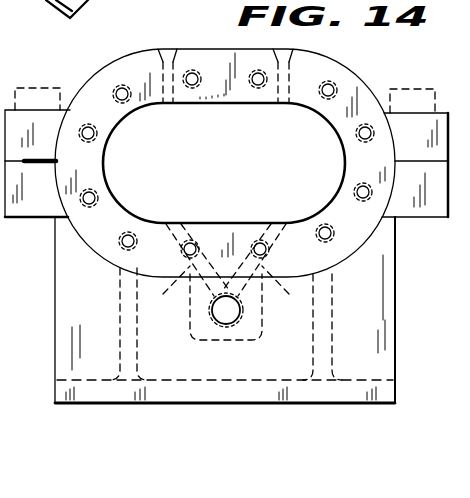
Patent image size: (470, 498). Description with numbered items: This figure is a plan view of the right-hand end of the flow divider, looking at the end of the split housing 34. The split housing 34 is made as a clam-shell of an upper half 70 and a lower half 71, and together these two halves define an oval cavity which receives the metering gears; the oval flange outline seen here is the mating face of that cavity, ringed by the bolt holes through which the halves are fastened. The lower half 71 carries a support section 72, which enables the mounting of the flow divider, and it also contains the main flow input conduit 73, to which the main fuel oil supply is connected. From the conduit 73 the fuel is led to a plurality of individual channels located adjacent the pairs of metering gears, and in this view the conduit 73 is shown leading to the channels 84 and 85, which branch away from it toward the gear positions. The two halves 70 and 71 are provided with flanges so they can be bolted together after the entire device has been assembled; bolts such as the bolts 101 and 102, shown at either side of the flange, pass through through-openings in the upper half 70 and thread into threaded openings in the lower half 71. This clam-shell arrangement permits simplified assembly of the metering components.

The split housing 34 is at (397, 288).
The upper half 70 is at (108, 64).
The lower half 71 is at (104, 247).
The support section 72 is at (198, 392).
The main flow input conduit 73 is at (226, 316).
The channel 84 is at (189, 274).
The channel 85 is at (259, 274).
The bolt 101 is at (48, 71).
The bolt 102 is at (432, 72).